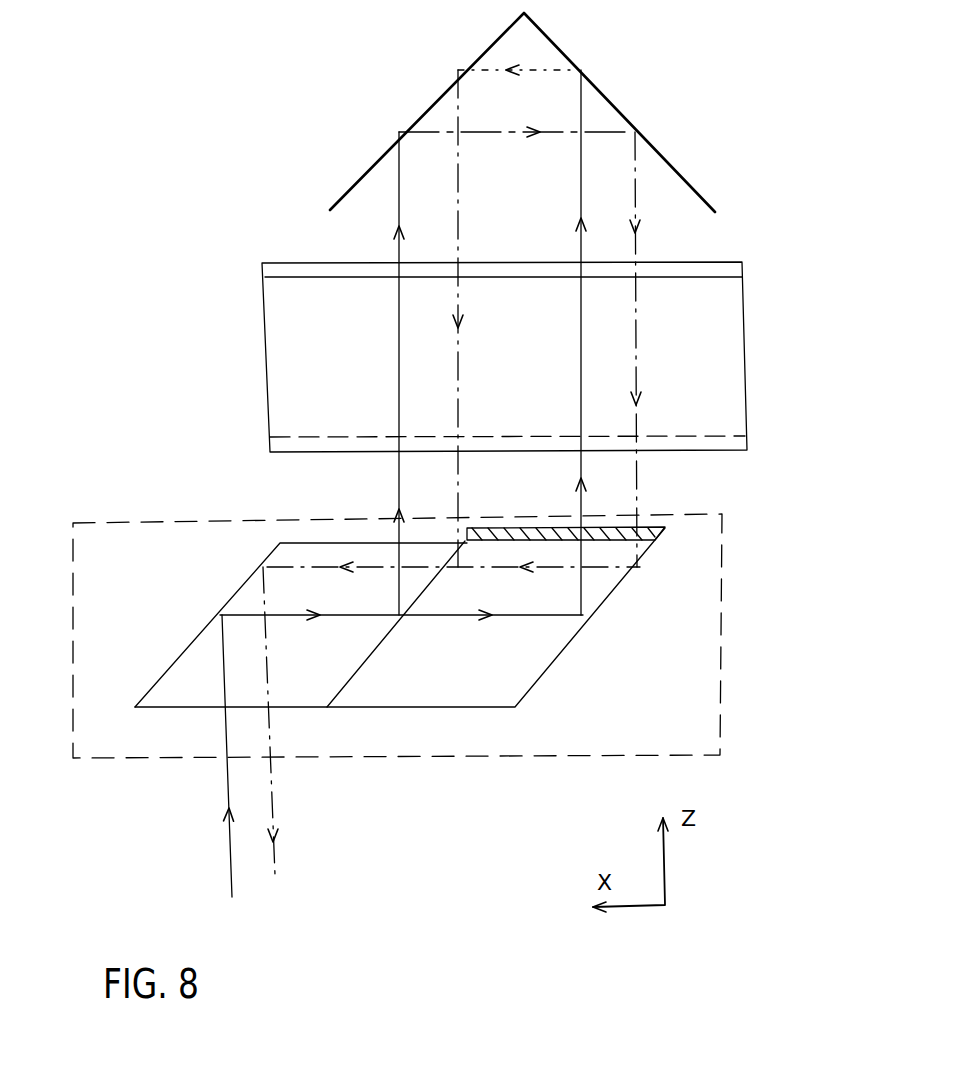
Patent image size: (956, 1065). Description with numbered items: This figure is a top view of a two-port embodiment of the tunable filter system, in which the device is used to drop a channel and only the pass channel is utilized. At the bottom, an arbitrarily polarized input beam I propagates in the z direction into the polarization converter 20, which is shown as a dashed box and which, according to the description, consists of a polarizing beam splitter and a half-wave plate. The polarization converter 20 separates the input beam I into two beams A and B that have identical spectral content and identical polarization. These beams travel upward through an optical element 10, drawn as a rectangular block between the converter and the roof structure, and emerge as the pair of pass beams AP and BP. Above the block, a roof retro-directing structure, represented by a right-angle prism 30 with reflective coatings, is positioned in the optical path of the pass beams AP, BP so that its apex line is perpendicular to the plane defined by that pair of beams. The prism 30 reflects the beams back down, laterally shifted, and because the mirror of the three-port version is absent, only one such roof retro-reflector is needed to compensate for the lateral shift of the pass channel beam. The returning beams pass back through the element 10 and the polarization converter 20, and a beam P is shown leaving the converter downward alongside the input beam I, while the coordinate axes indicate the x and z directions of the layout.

The right-angle prism 30 is at (702, 182).
The optical block / wave plate 10 is at (252, 368).
The polarization converter 20 is at (732, 685).
The pass beam AP is at (390, 236).
The pass beam BP is at (579, 228).
The beam A is at (395, 498).
The beam B is at (585, 468).
The input beam I is at (214, 756).
The P beam P is at (284, 721).